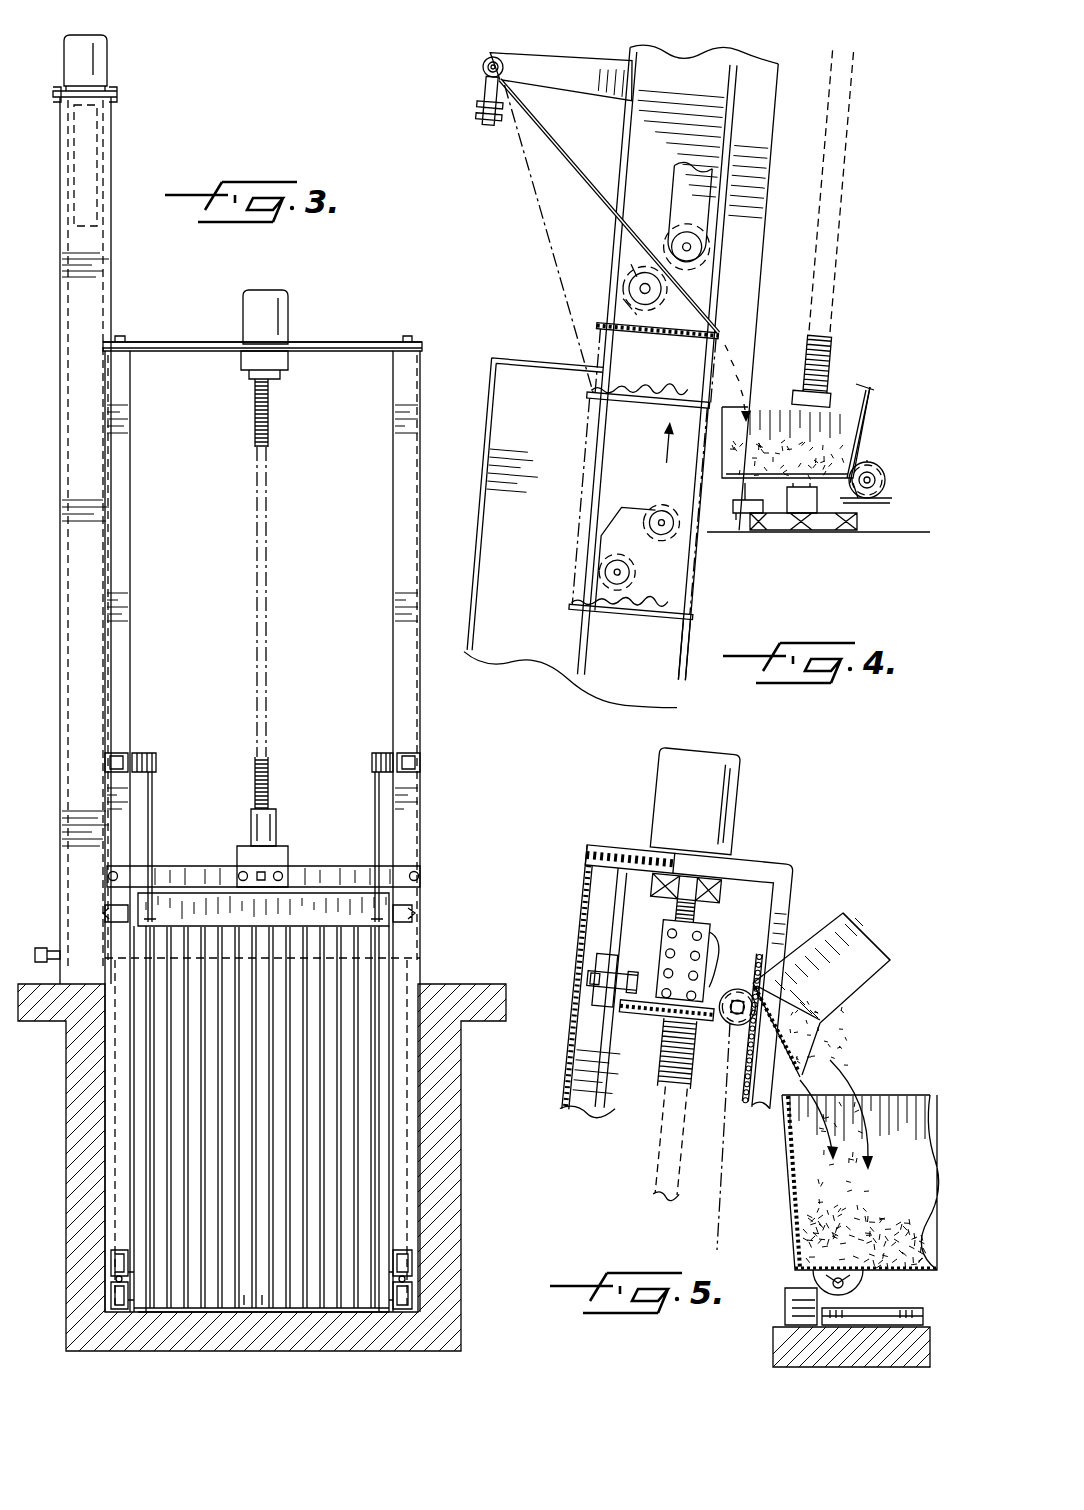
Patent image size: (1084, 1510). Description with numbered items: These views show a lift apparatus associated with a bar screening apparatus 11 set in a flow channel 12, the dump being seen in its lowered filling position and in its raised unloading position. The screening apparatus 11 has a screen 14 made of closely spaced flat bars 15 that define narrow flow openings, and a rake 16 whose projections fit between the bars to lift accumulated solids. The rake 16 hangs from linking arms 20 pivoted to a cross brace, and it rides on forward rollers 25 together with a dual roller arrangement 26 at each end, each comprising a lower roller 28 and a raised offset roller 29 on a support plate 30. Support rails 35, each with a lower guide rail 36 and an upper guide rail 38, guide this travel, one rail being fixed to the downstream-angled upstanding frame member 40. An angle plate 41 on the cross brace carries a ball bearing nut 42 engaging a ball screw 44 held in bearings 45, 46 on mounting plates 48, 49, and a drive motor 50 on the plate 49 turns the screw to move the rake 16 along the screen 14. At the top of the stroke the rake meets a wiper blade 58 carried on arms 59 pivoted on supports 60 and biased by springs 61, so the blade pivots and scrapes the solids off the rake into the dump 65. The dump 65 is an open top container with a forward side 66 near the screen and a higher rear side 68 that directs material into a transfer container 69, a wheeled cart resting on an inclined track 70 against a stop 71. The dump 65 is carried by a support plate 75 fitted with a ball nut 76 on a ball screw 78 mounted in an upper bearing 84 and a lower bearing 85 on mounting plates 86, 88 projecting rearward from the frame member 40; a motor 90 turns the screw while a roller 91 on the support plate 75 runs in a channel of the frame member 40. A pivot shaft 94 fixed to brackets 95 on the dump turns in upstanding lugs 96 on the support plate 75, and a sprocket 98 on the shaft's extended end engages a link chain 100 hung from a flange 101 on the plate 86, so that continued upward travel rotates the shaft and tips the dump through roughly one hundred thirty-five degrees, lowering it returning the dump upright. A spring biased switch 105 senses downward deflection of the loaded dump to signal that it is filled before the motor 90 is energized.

In FIG. 3, the bar screening apparatus 11 is at (429, 384).
In FIG. 3, the flow channel 12 is at (422, 1000).
In FIG. 3, the screen 14 is at (300, 1302).
In FIG. 4, the screen 14 is at (705, 642).
In FIG. 3, the flat bars 15 is at (262, 1300).
In FIG. 4, the rake 16 is at (603, 350).
In FIG. 3, the linking arms 20 is at (134, 1212).
In FIG. 4, the linking arms 20 is at (702, 170).
In FIG. 3, the forward rollers 25 is at (105, 913).
In FIG. 3, the dual roller arrangement 26 is at (111, 1279).
In FIG. 4, the dual roller arrangement 26 is at (660, 234).
In FIG. 3, the lower roller 28 is at (111, 1262).
In FIG. 4, the lower roller 28 is at (716, 245).
In FIG. 3, the roller 29 is at (111, 1296).
In FIG. 4, the roller 29 is at (632, 277).
In FIG. 3, the support plate 30 is at (128, 1292).
In FIG. 3, the support rails 35 is at (131, 542).
In FIG. 4, the lower guide rail 36 is at (665, 690).
In FIG. 4, the upper guide rail 38 is at (562, 648).
In FIG. 3, the upstanding frame member 40 is at (112, 172).
In FIG. 4, the upstanding frame member 40 is at (778, 95).
In FIG. 5, the upstanding frame member 40 is at (585, 980).
In FIG. 3, the angle plate 41 is at (288, 860).
In FIG. 3, the ball bearing nut 42 is at (276, 830).
In FIG. 3, the ball screw 44 is at (258, 447).
In FIG. 5, the ball screw 44 is at (722, 1030).
In FIG. 3, the bearing 45 is at (258, 872).
In FIG. 3, the bearing 46 is at (241, 360).
In FIG. 3, the mounting plate 48 is at (182, 866).
In FIG. 3, the mounting plate 49 is at (203, 342).
In FIG. 3, the drive motor 50 is at (247, 290).
In FIG. 3, the wiper blade 58 is at (269, 922).
In FIG. 4, the wiper blade 58 is at (724, 338).
In FIG. 3, the arms 59 is at (153, 808).
In FIG. 4, the arms 59 is at (574, 150).
In FIG. 3, the supports 60 is at (118, 753).
In FIG. 4, the supports 60 is at (572, 58).
In FIG. 3, the springs 61 is at (146, 753).
In FIG. 4, the springs 61 is at (483, 70).
In FIG. 4, the dump 65 is at (852, 392).
In FIG. 5, the dump 65 is at (882, 975).
In FIG. 4, the forward side 66 is at (740, 430).
In FIG. 5, the forward side 66 is at (870, 930).
In FIG. 4, the rear side 68 is at (872, 388).
In FIG. 5, the rear side 68 is at (806, 1058).
In FIG. 5, the transfer container 69 is at (786, 1187).
In FIG. 5, the inclined track 70 is at (908, 1310).
In FIG. 5, the stop 71 is at (786, 1318).
In FIG. 4, the support plate 75 is at (800, 530).
In FIG. 5, the support plate 75 is at (646, 1010).
In FIG. 4, the ball nut 76 is at (794, 404).
In FIG. 5, the ball nut 76 is at (672, 948).
In FIG. 4, the ball screw 78 is at (850, 125).
In FIG. 5, the ball screw 78 is at (662, 1140).
In FIG. 5, the upper bearing 84 is at (658, 887).
In FIG. 4, the lower bearing 85 is at (842, 533).
In FIG. 3, the mounting plate 86 is at (110, 94).
In FIG. 5, the mounting plate 86 is at (632, 845).
In FIG. 4, the mounting plate 88 is at (757, 520).
In FIG. 3, the motor 90 is at (107, 52).
In FIG. 5, the motor 90 is at (740, 778).
In FIG. 5, the roller 91 is at (605, 965).
In FIG. 4, the pivot shaft 94 is at (870, 500).
In FIG. 4, the brackets 95 is at (882, 470).
In FIG. 4, the upstanding lugs 96 is at (875, 480).
In FIG. 4, the sprocket 98 is at (873, 462).
In FIG. 5, the sprocket 98 is at (748, 985).
In FIG. 5, the link chain 100 is at (752, 1088).
In FIG. 5, the flange 101 is at (786, 925).
In FIG. 4, the switch 105 is at (718, 530).